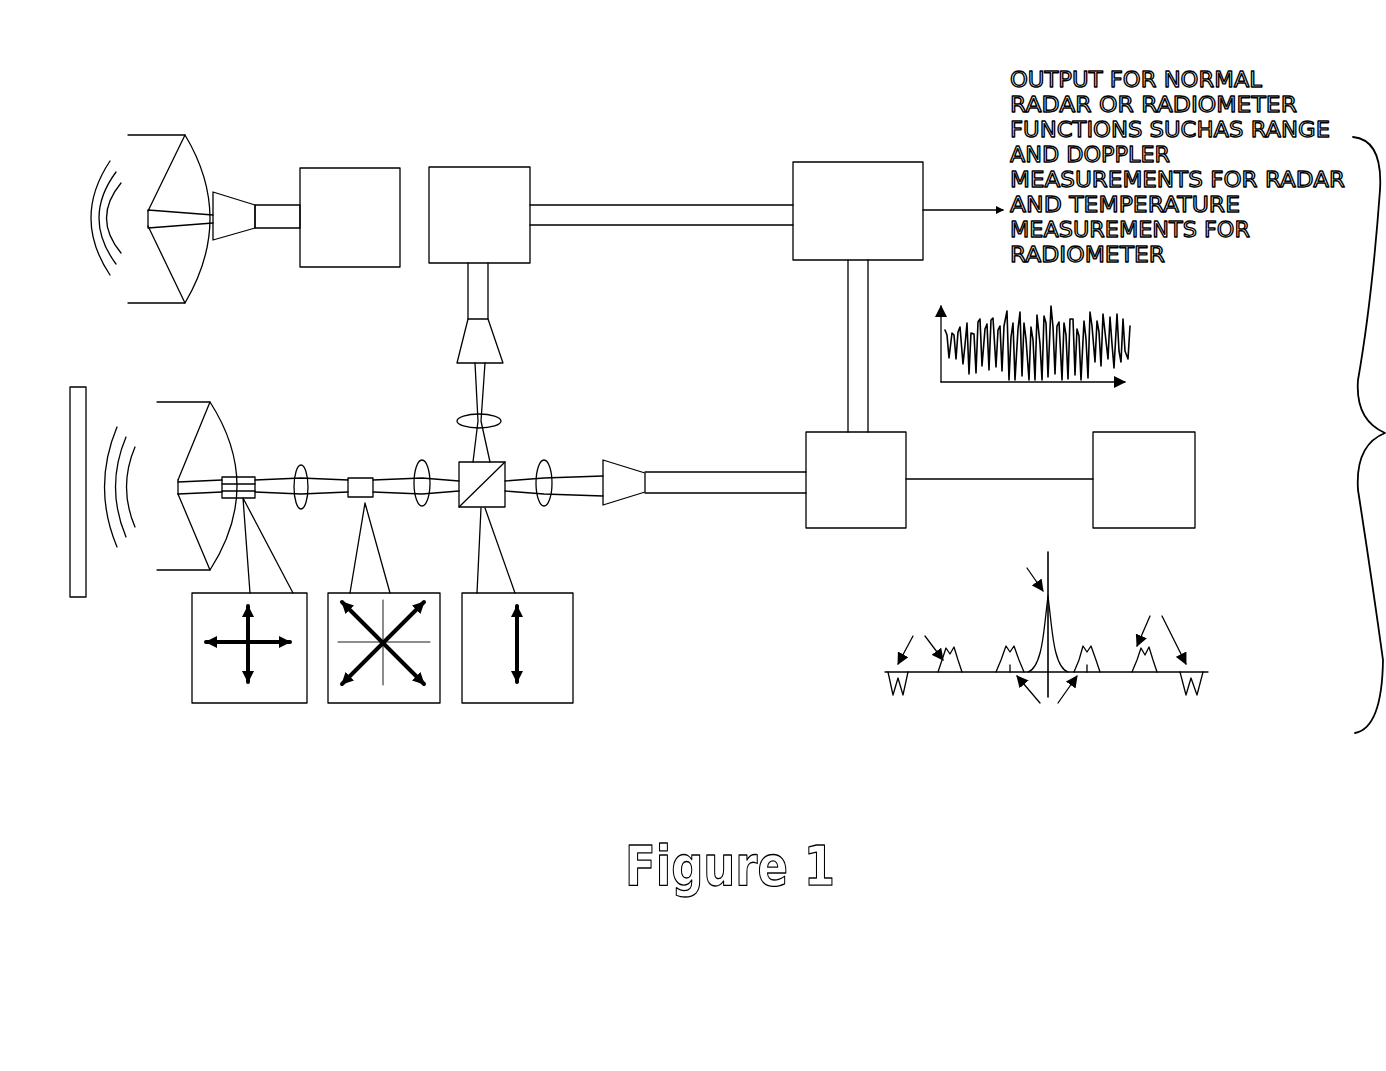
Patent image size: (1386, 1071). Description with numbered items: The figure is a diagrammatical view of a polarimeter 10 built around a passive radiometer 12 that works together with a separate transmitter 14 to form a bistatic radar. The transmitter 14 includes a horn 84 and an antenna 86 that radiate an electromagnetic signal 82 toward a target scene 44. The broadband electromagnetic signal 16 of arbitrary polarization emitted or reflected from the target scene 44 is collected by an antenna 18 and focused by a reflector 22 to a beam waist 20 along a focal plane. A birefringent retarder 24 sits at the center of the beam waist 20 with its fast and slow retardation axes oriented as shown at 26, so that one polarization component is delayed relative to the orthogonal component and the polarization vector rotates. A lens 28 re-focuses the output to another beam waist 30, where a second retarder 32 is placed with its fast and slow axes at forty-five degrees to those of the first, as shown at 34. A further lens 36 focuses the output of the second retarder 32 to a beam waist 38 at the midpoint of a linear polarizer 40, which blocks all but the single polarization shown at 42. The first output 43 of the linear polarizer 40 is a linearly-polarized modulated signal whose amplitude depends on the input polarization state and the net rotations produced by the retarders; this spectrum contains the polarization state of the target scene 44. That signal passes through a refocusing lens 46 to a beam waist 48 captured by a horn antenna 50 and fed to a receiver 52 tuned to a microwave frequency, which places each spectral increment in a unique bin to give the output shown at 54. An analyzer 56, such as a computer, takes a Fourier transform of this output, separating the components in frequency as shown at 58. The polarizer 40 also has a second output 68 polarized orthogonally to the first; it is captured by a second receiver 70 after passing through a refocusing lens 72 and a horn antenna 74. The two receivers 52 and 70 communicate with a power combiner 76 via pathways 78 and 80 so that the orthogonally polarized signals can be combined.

The polarimeter 10 is at (803, 116).
The passive radiometer 12 is at (766, 564).
The transmitter 14 is at (305, 168).
The broadband electromagnetic signal 16 is at (120, 550).
The antenna 18 is at (228, 415).
The beam waist 20 is at (198, 478).
The reflector 22 is at (178, 490).
The retarder 24 is at (255, 477).
The fast and slow axes orientation 26 is at (220, 703).
The lens 28 is at (301, 509).
The beam waist 30 is at (350, 500).
The second retarder 32 is at (418, 460).
The axes orientation at 45 degrees 34 is at (365, 703).
The lens 36 is at (425, 460).
The beam waist 38 is at (458, 490).
The linear polarizer 40 is at (508, 505).
The single polarization orientation 42 is at (573, 620).
The first output 43 is at (505, 478).
The target scene 44 is at (80, 598).
The refocusing lens 46 is at (548, 460).
The beam waist 48 is at (587, 480).
The horn antenna 50 is at (635, 497).
The receiver 52 is at (818, 429).
The receiver output 54 is at (938, 330).
The analyzer 56 is at (1175, 432).
The Fourier transform output 58 is at (1205, 605).
The second output 68 is at (497, 462).
The second receiver 70 is at (530, 258).
The refocusing lens 72 is at (491, 413).
The horn antenna 74 is at (462, 328).
The power combiner 76 is at (882, 162).
The pathway 78 is at (695, 205).
The pathway 80 is at (848, 300).
The transmitted electromagnetic signal 82 is at (106, 185).
The horn 84 is at (232, 198).
The antenna 86 is at (207, 268).